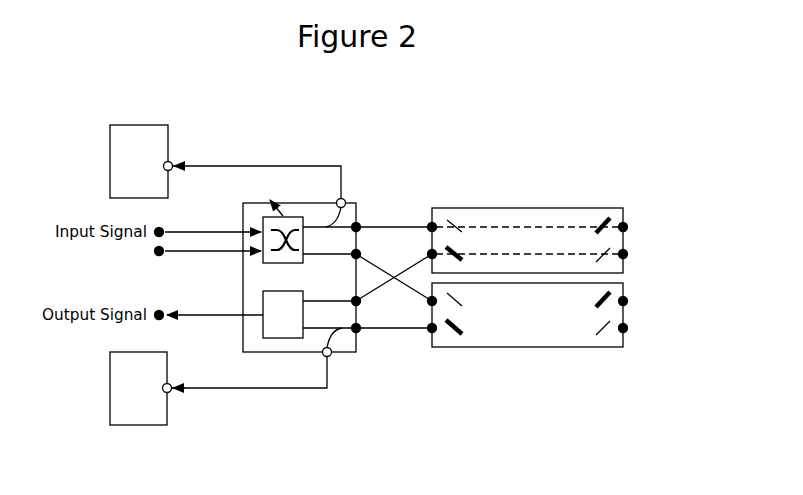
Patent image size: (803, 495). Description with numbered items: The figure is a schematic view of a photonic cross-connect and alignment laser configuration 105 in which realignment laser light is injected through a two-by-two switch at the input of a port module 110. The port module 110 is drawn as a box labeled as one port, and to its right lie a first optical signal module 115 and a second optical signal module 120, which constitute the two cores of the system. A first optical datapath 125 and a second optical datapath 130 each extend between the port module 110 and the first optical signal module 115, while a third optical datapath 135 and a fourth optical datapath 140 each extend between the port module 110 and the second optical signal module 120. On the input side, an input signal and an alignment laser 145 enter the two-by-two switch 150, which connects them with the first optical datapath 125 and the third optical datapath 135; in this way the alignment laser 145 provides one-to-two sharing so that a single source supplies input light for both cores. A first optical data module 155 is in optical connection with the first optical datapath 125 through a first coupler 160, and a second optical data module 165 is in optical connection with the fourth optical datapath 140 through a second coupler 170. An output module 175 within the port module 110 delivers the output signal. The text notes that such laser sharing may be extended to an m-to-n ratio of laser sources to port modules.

The photonic cross-connect and alignment laser configuration 105 is at (509, 126).
The port module 110 is at (243, 307).
The first optical signal module 115 is at (489, 210).
The second optical signal module 120 is at (518, 345).
The first optical datapath 125 is at (410, 222).
The second optical datapath 130 is at (369, 305).
The third optical datapath 135 is at (379, 265).
The fourth optical datapath 140 is at (396, 333).
The alignment laser 145 is at (152, 258).
The 2×2 switch 150 is at (260, 224).
The first optical data module 155 is at (160, 128).
The first coupler 160 is at (346, 198).
The second optical data module 165 is at (160, 418).
The second coupler 170 is at (332, 360).
The output module 175 is at (268, 327).